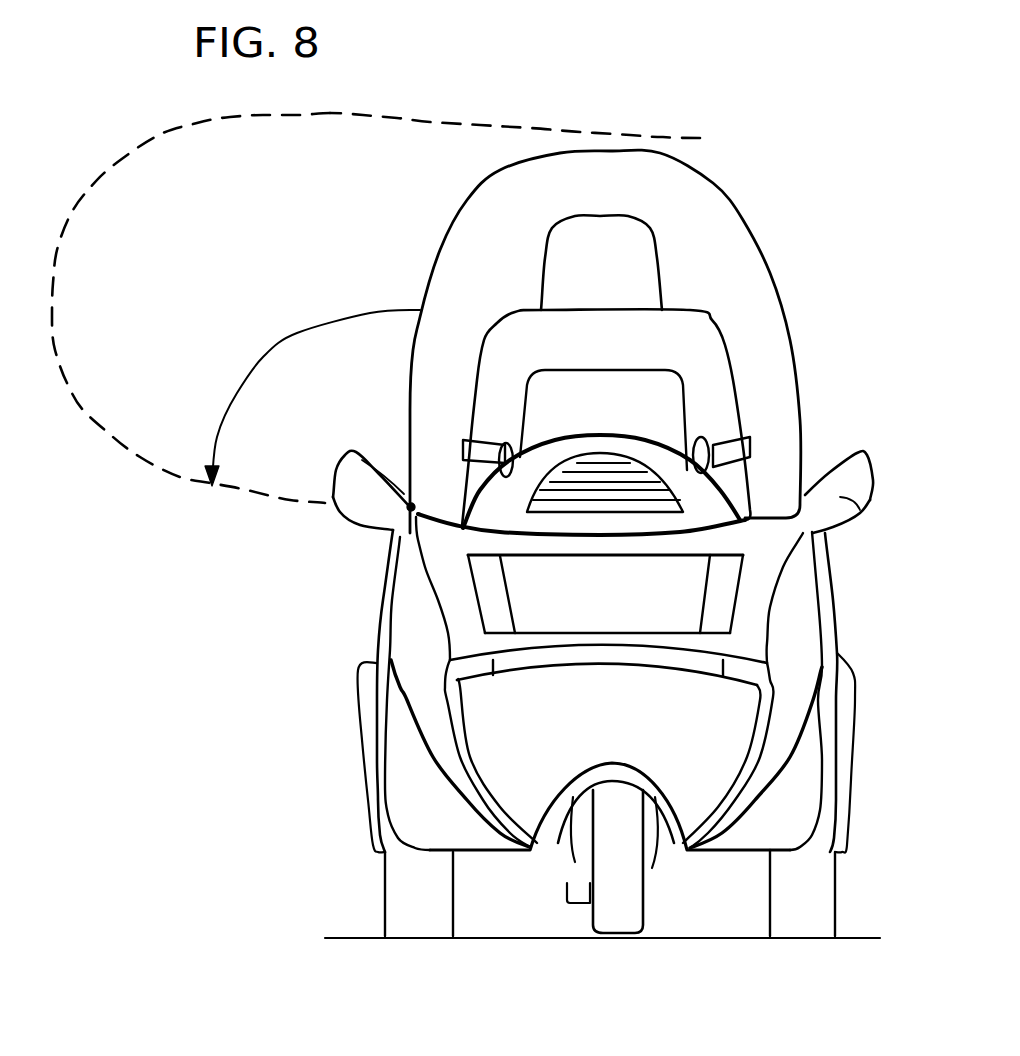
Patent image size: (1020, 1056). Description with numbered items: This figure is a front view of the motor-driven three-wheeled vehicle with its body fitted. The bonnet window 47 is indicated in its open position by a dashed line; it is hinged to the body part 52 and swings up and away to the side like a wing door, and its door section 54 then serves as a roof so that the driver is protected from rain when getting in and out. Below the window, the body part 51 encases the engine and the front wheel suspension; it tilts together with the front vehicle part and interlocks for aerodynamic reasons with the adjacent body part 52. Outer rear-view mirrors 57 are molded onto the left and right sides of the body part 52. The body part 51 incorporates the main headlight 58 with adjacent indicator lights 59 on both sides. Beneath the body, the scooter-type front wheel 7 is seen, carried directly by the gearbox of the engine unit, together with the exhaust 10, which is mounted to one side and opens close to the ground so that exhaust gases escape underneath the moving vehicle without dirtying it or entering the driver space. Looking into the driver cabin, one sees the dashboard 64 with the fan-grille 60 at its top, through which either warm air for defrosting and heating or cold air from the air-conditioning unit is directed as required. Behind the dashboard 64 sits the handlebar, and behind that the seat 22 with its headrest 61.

The front wheel 7 is at (627, 903).
The exhaust 10 is at (567, 857).
The seat 22 is at (687, 350).
The bonnet window 47 is at (467, 203).
The body part 51 is at (523, 750).
The body part 52 is at (415, 608).
The door section 54 is at (640, 137).
The outer rear-view mirrors 57 is at (372, 488).
The main headlight 58 is at (613, 600).
The indicator lights 59 is at (483, 607).
The fan-grille 60 is at (613, 480).
The headrest 61 is at (633, 270).
The dashboard 64 is at (703, 510).